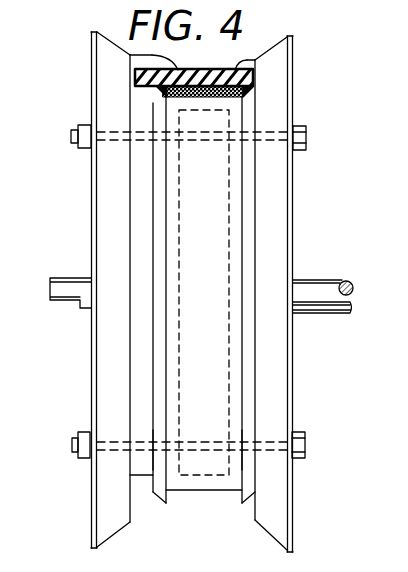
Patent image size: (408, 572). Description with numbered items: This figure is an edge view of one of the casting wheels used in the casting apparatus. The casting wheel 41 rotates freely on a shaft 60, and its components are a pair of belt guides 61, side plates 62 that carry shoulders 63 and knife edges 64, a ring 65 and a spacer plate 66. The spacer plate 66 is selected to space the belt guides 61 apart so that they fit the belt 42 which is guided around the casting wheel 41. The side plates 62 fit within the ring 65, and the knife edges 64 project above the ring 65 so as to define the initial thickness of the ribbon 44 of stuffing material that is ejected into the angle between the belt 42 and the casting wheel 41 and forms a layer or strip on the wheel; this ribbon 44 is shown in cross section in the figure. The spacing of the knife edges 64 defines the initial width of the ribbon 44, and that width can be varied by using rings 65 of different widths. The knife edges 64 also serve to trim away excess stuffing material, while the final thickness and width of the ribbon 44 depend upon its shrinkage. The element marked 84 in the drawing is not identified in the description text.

The casting wheel 41 is at (300, 105).
The belt 42 is at (257, 92).
The ribbon 44 is at (128, 53).
The shaft 60 is at (303, 279).
The belt guides 61 is at (120, 181).
The side plates 62 is at (158, 217).
The shoulders 63 is at (157, 90).
The knife edges 64 is at (157, 505).
The ring 65 is at (213, 225).
The spacer plate 66 is at (143, 104).
The insulating layer 84 is at (253, 94).